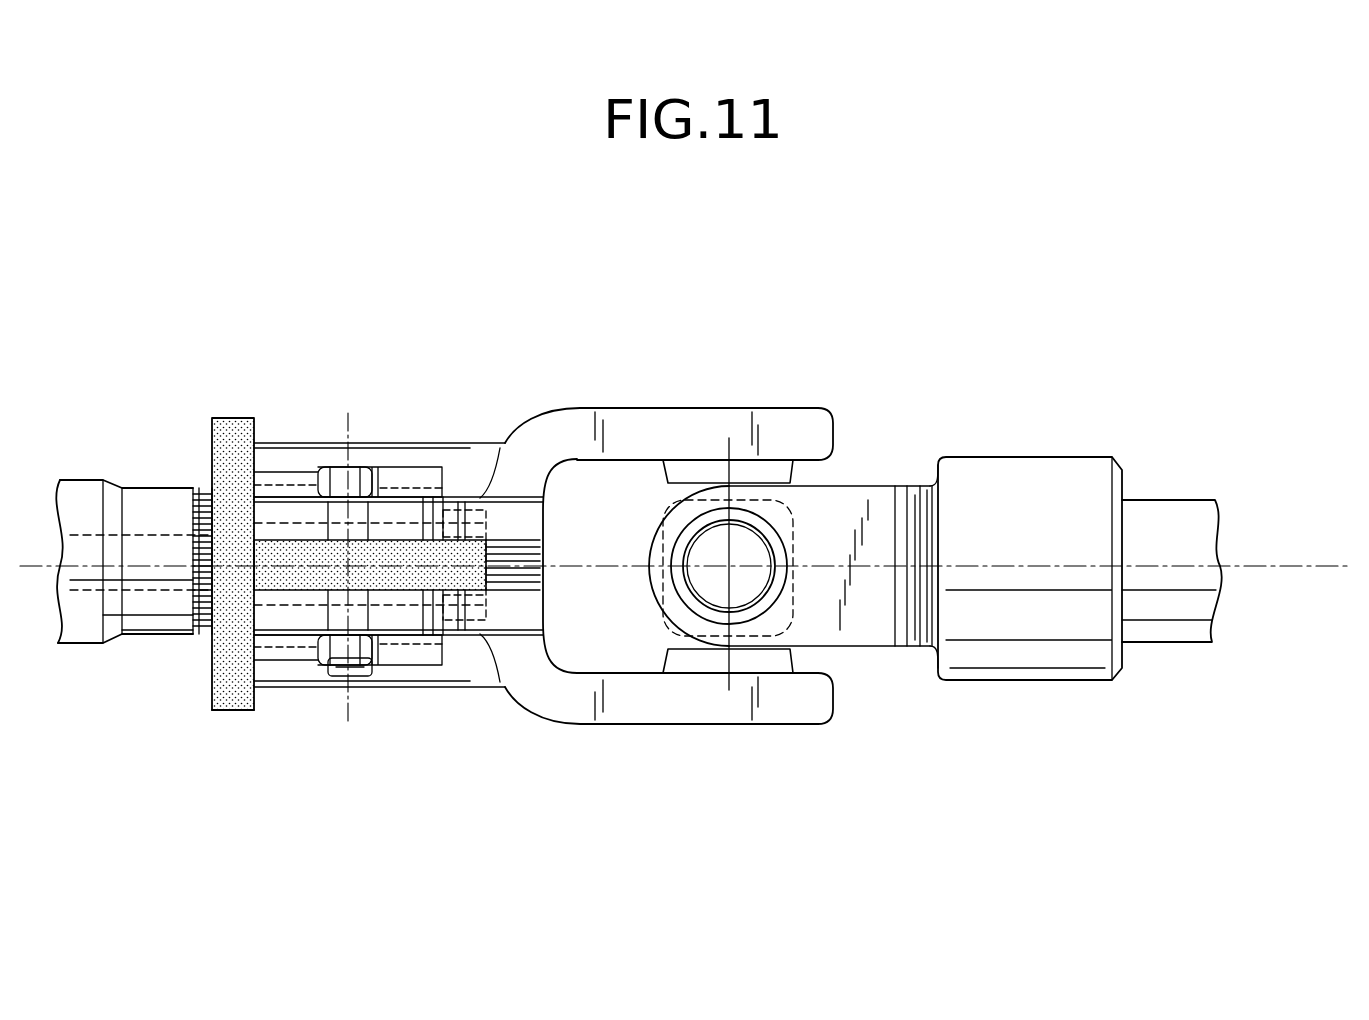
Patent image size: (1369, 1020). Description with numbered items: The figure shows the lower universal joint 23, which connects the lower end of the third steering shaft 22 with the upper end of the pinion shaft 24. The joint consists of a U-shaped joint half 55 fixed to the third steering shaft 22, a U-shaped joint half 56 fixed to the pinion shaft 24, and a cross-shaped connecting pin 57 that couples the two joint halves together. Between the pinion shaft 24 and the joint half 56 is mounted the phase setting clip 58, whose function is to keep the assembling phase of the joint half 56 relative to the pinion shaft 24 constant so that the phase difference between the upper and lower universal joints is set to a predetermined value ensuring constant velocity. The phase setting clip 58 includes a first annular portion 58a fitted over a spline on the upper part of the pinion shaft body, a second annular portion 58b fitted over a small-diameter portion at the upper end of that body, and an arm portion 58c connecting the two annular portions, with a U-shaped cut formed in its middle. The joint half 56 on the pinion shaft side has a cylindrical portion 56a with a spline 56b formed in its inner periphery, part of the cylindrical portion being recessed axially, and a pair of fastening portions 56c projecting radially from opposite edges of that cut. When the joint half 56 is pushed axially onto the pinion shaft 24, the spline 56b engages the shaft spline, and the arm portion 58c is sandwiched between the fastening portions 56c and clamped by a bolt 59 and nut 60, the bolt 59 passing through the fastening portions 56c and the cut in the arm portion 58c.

The third steering shaft 22 is at (1172, 512).
The lower universal joint 23 is at (863, 358).
The pinion shaft 24 is at (133, 480).
The U-shaped joint half 55 is at (899, 464).
The U-shaped joint half 56 is at (639, 402).
The cylindrical portion 56a is at (397, 443).
The spline 56b is at (530, 566).
The fastening portions 56c is at (293, 508).
The cross-shaped connecting pin 57 is at (688, 488).
The phase setting clip 58 is at (230, 416).
The first annular portion 58a is at (232, 710).
The second annular portion 58b is at (470, 525).
The arm portion 58c is at (423, 600).
The bolt 59 is at (343, 478).
The nut 60 is at (360, 677).